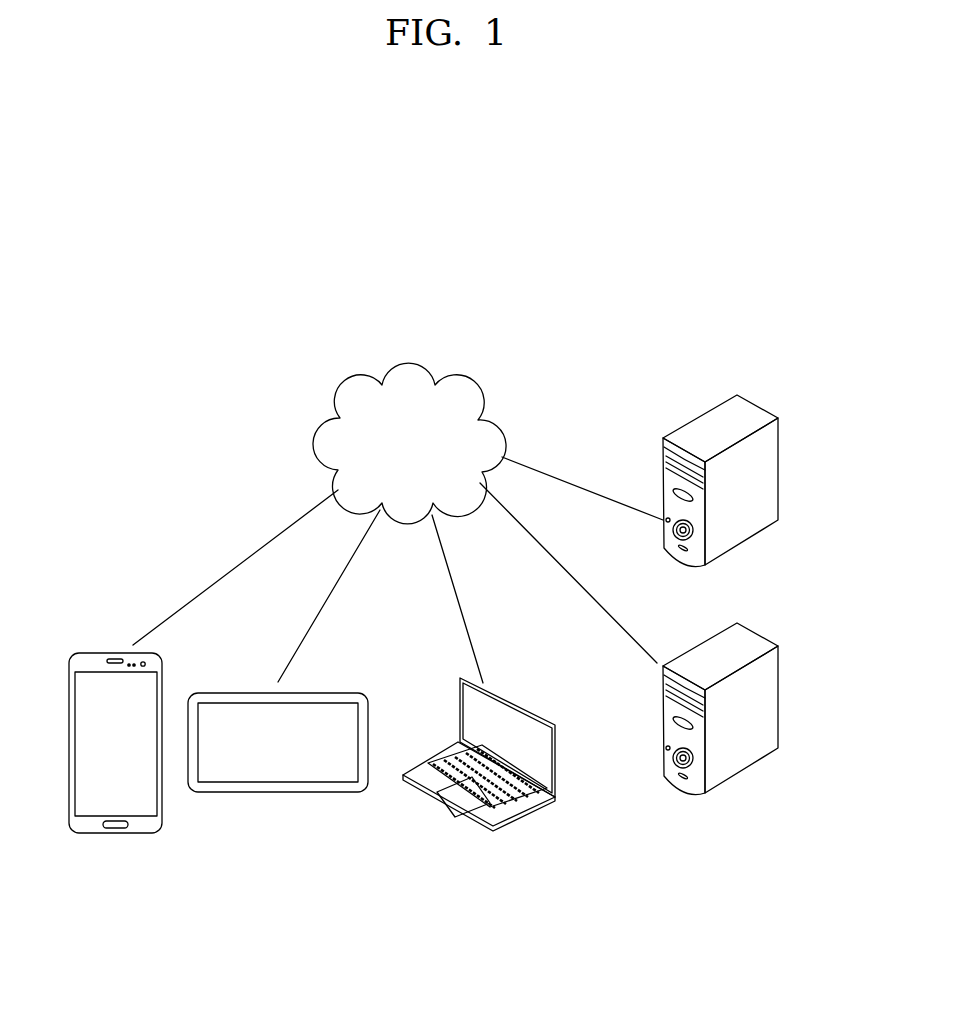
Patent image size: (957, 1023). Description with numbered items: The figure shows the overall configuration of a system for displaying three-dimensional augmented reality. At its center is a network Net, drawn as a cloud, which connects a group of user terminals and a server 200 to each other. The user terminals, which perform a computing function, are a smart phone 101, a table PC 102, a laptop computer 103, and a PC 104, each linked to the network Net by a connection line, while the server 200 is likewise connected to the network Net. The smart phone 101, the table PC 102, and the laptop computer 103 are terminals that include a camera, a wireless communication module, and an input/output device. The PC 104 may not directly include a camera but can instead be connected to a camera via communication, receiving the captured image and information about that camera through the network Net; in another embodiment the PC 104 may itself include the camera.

The network Net is at (408, 363).
The smart phone 101 is at (115, 835).
The table personal computer 102 is at (278, 795).
The laptop computer 103 is at (512, 700).
The PC 104 is at (778, 698).
The server 200 is at (778, 470).